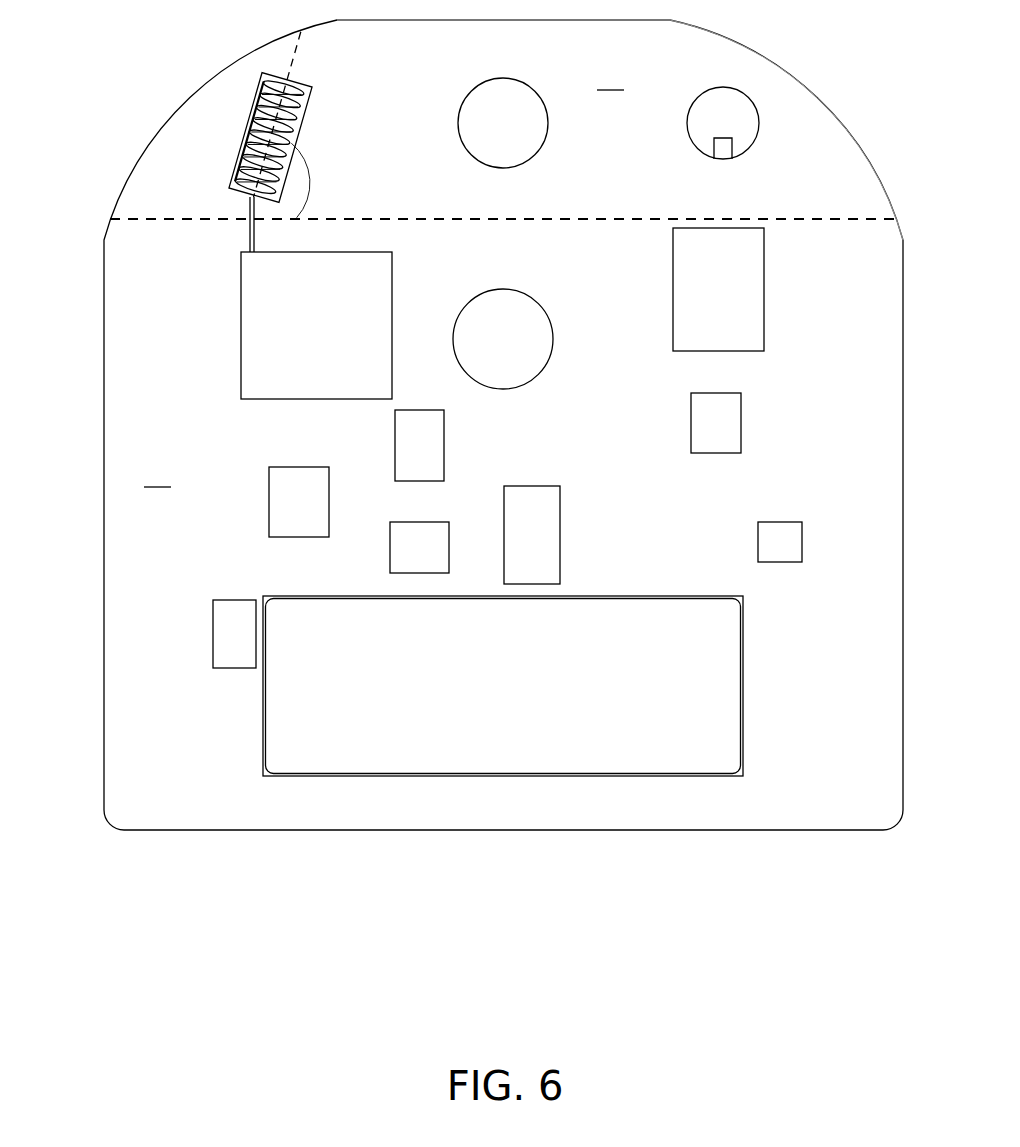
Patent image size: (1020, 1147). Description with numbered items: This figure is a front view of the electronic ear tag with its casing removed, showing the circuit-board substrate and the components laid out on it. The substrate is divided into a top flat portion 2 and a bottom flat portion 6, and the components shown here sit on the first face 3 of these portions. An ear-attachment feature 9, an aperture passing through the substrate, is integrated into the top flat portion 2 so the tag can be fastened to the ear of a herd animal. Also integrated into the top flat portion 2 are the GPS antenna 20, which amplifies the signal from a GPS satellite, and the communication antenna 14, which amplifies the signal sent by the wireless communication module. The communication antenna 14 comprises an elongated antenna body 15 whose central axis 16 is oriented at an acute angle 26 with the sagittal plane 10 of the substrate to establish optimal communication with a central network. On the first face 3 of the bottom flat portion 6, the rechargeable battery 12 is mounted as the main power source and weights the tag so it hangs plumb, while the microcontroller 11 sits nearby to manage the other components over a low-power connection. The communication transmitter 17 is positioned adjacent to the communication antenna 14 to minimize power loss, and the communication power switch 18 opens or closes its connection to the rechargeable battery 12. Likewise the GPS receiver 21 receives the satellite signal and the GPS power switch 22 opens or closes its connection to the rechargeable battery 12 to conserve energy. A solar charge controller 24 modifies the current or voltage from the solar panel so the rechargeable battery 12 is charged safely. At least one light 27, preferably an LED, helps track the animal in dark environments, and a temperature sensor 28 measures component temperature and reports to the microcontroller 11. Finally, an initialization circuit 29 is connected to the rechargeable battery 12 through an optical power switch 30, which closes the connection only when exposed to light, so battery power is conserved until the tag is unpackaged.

The top flat portion 2 is at (124, 193).
The first face 3 is at (384, 272).
The bottom flat portion 6 is at (118, 437).
The ear-attachment feature 9 is at (519, 132).
The sagittal plane 10 is at (195, 221).
The microcontroller 11 is at (552, 528).
The rechargeable battery 12 is at (273, 715).
The communication antenna 14 is at (210, 121).
The elongated antenna body 15 is at (250, 153).
The central axis 16 is at (295, 53).
The communication transmitter 17 is at (243, 328).
The communication power switch 18 is at (277, 503).
The GPS antenna 20 is at (725, 152).
The GPS receiver 21 is at (758, 278).
The GPS power switch 22 is at (732, 418).
The solar charge controller 24 is at (220, 633).
The acute angle 26 is at (306, 178).
The at least one light 27 is at (780, 555).
The temperature sensor 28 is at (535, 370).
The initialization circuit 29 is at (437, 452).
The optical power switch 30 is at (394, 545).